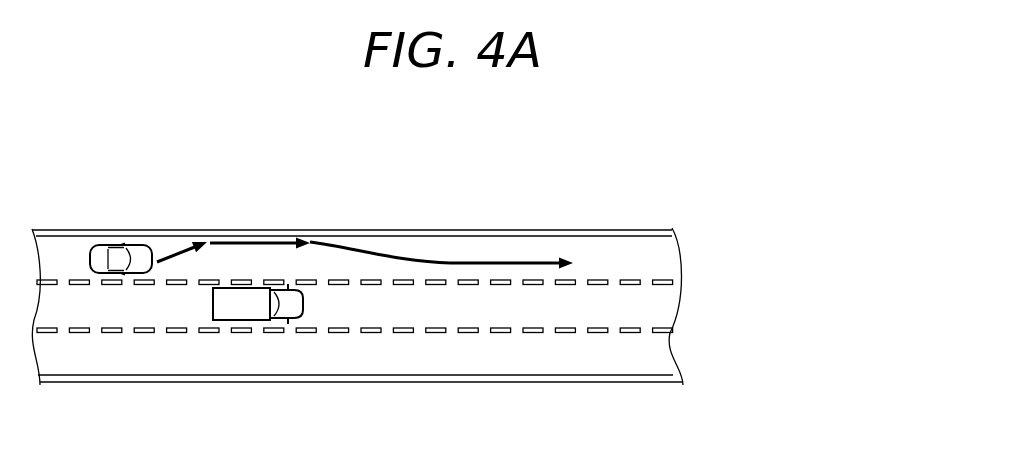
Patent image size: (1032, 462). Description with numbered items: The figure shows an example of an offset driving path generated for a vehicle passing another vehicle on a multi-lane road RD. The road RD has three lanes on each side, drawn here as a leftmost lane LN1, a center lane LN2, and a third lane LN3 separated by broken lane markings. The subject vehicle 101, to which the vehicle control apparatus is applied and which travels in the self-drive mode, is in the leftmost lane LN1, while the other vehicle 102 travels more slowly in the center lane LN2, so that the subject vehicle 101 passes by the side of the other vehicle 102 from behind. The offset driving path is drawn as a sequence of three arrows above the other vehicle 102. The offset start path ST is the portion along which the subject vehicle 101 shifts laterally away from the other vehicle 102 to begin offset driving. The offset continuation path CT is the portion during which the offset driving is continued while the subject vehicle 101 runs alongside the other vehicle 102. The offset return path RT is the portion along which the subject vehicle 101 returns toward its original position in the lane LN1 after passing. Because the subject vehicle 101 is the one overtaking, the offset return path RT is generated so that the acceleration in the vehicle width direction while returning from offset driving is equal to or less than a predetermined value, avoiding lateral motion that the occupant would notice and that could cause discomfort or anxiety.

The subject vehicle 101 is at (115, 246).
The other vehicle 102 is at (228, 321).
The offset start path ST is at (170, 251).
The offset continuation path CT is at (265, 240).
The offset return path RT is at (353, 247).
The road RD is at (603, 232).
The leftmost lane LN1 is at (660, 255).
The center lane LN2 is at (660, 308).
The third lane LN3 is at (660, 363).